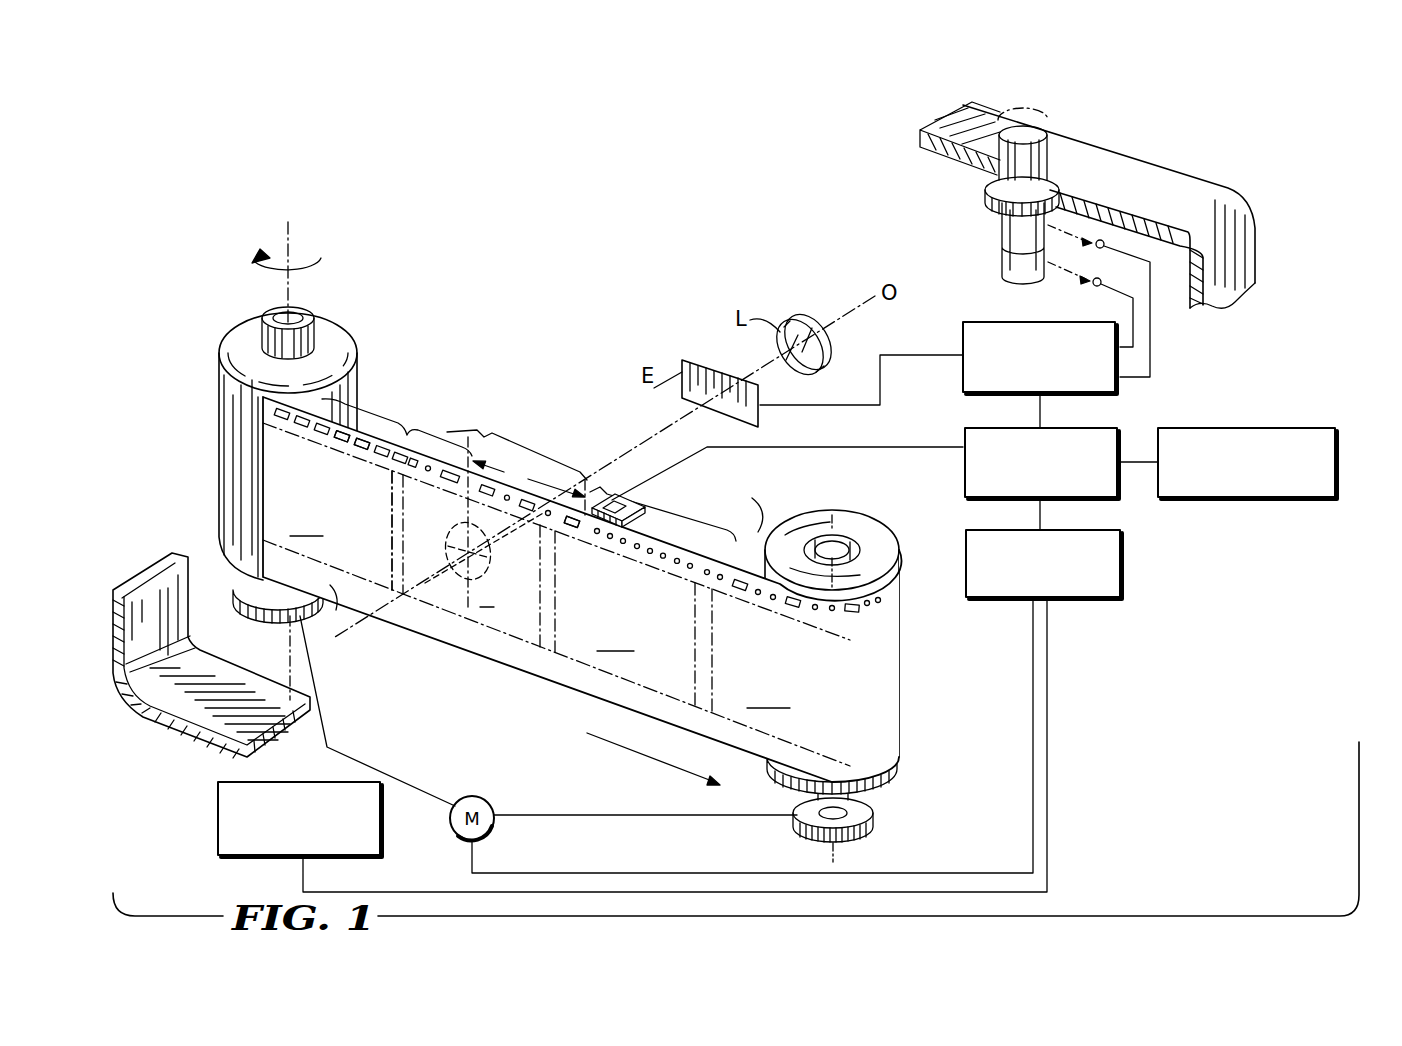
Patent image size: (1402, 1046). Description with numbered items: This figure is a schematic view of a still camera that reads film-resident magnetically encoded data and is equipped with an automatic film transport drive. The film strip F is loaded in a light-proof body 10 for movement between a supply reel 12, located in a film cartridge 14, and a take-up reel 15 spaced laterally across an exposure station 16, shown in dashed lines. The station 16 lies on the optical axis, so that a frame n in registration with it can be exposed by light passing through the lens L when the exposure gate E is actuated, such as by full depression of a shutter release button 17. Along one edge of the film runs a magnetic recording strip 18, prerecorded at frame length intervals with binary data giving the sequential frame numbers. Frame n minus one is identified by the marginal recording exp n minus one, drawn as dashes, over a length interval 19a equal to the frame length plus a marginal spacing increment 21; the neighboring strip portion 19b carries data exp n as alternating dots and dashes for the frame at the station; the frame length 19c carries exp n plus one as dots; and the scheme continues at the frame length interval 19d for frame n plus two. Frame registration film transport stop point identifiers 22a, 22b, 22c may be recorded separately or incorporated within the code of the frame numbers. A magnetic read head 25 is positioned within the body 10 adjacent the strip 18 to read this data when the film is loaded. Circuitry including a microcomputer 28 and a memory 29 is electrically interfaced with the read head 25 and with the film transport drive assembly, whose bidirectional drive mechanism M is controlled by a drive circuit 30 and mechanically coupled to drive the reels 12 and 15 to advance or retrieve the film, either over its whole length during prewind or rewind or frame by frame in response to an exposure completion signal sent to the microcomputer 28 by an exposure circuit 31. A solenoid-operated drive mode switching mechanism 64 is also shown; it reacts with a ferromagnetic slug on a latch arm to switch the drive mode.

The light-proof body 10 is at (183, 706).
The supply reel 12 is at (272, 322).
The film cartridge 14 is at (238, 410).
The take-up reel 15 is at (850, 814).
The exposure station 16 is at (528, 650).
The shutter release button 17 is at (1058, 135).
The magnetic recording strip 18 is at (410, 438).
The length interval 19a is at (369, 415).
The strip portion 19b is at (444, 468).
The frame length 19c is at (680, 540).
The frame length interval 19d is at (852, 617).
The marginal spacing increment 21 is at (397, 542).
The frame registration film transport stop point identifier 22a is at (415, 478).
The frame registration film transport stop point identifier 22b is at (578, 540).
The frame registration film transport stop point identifier 22c is at (735, 592).
The magnetic read head 25 is at (636, 509).
The microcomputer 28 is at (1083, 412).
The memory 29 is at (1247, 451).
The drive circuit 30 is at (1044, 550).
The exposure circuit 31 is at (1080, 322).
The drive mode switching mechanism 64 is at (382, 836).